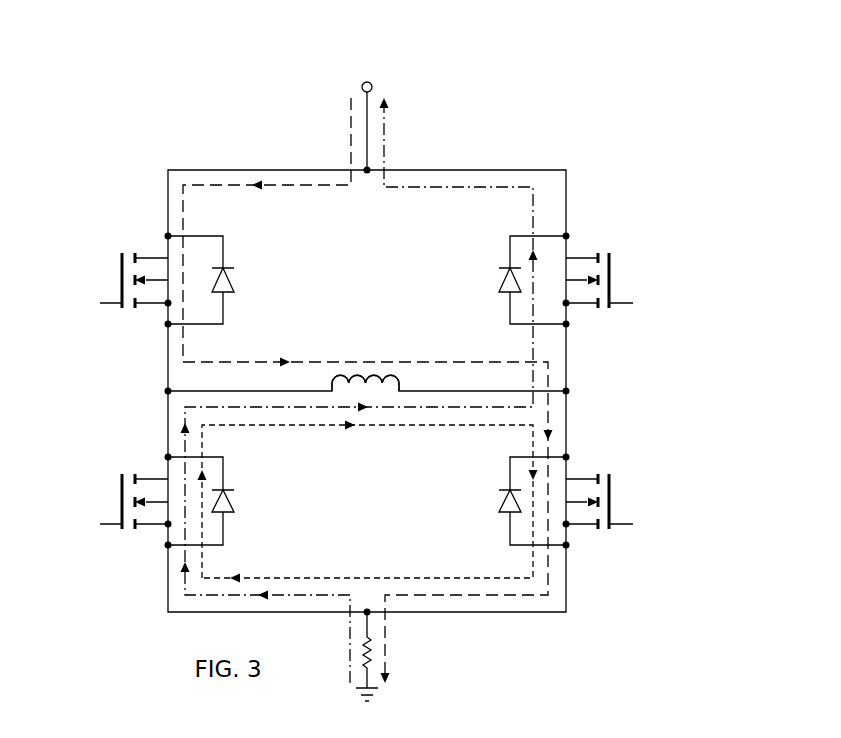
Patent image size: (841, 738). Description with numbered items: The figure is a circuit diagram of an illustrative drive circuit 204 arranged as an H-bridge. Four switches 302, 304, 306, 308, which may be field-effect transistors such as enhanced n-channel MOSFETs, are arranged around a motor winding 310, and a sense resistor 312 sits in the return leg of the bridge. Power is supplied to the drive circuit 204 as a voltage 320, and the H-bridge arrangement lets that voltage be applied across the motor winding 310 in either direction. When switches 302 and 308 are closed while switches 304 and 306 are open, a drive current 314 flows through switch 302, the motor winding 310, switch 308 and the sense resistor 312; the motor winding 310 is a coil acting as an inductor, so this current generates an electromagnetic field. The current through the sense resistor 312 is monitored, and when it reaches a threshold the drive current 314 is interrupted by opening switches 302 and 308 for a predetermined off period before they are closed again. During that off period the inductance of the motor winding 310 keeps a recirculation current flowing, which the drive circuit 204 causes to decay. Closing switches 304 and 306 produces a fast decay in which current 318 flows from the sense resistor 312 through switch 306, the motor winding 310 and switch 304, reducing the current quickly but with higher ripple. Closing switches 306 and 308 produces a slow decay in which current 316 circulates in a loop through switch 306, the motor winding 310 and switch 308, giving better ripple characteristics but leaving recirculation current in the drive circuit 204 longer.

The drive circuit 204 is at (491, 118).
The switch 302 is at (120, 268).
The switch 304 is at (613, 268).
The switch 306 is at (120, 490).
The switch 308 is at (613, 490).
The motor winding 310 is at (378, 371).
The sense resistor 312 is at (387, 631).
The drive current 314 is at (296, 189).
The current 316 is at (427, 427).
The current 318 is at (456, 189).
The voltage 320 is at (361, 88).